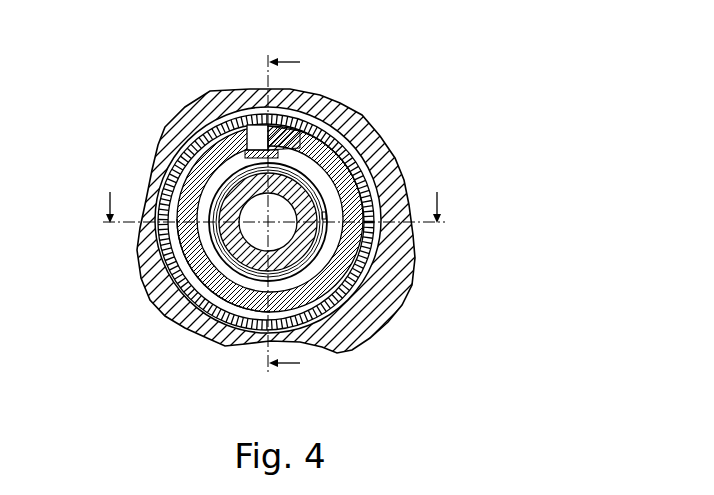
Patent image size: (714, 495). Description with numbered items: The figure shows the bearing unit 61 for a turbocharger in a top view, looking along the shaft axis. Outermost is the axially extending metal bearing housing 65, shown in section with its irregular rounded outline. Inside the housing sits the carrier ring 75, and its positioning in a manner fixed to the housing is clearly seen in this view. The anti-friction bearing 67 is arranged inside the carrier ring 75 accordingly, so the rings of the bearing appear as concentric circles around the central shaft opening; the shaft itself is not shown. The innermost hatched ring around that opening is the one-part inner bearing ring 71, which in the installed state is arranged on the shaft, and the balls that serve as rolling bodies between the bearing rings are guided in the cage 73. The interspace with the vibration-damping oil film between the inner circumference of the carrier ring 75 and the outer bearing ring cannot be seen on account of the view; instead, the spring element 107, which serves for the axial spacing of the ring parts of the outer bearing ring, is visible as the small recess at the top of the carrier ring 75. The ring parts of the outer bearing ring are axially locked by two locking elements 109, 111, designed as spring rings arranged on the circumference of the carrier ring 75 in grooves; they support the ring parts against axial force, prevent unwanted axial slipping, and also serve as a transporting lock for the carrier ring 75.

The bearing unit 61 is at (478, 93).
The bearing housing 65 is at (393, 165).
The anti-friction bearing 67 is at (147, 294).
The inner bearing ring 71 is at (209, 306).
The cage 73 is at (303, 262).
The carrier ring 75 is at (356, 136).
The spring element 107 is at (322, 124).
The locking element 109 is at (355, 242).
The locking element 111 is at (355, 242).